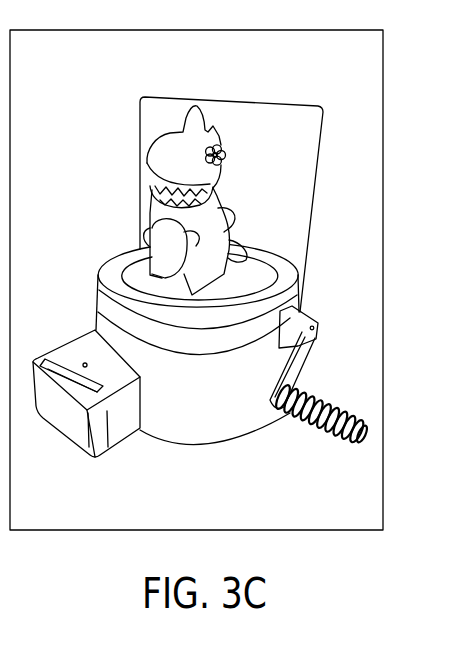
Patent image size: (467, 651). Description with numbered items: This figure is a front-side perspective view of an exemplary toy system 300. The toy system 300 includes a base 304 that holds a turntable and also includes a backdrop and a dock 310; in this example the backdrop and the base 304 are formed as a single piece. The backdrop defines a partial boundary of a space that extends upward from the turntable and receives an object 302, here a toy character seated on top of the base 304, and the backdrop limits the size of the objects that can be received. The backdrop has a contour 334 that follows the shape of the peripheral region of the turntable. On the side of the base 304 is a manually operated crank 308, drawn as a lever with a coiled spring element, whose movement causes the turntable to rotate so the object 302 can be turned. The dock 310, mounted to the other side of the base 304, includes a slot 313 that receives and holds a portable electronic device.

The toy system 300 is at (66, 64).
The object 302 is at (150, 167).
The base 304 is at (207, 428).
The crank 308 is at (360, 450).
The dock 310 is at (86, 425).
The slot 313 is at (55, 349).
The contour 334 is at (281, 123).